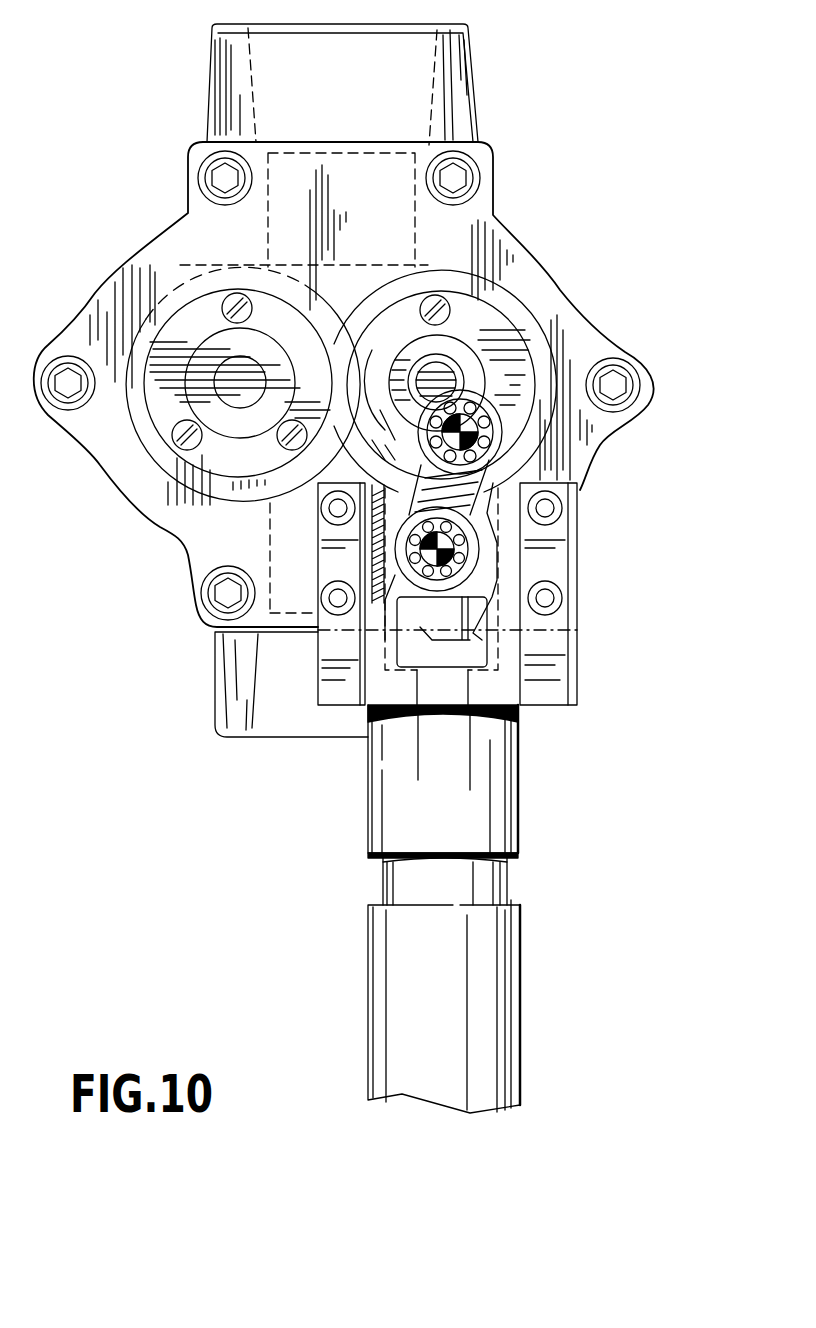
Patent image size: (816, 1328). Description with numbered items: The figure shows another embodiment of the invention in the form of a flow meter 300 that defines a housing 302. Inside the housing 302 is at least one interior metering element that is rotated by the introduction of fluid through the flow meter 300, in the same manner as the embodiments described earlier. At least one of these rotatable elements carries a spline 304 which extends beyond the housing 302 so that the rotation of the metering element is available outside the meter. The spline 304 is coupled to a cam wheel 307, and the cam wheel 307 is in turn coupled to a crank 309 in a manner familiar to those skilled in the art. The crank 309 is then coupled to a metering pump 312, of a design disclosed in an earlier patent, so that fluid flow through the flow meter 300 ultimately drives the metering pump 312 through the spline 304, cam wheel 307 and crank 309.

The flow meter 300 is at (138, 210).
The housing 302 is at (490, 240).
The spline 304 is at (443, 360).
The cam wheel 307 is at (487, 388).
The crank 309 is at (490, 484).
The metering pump 312 is at (532, 790).